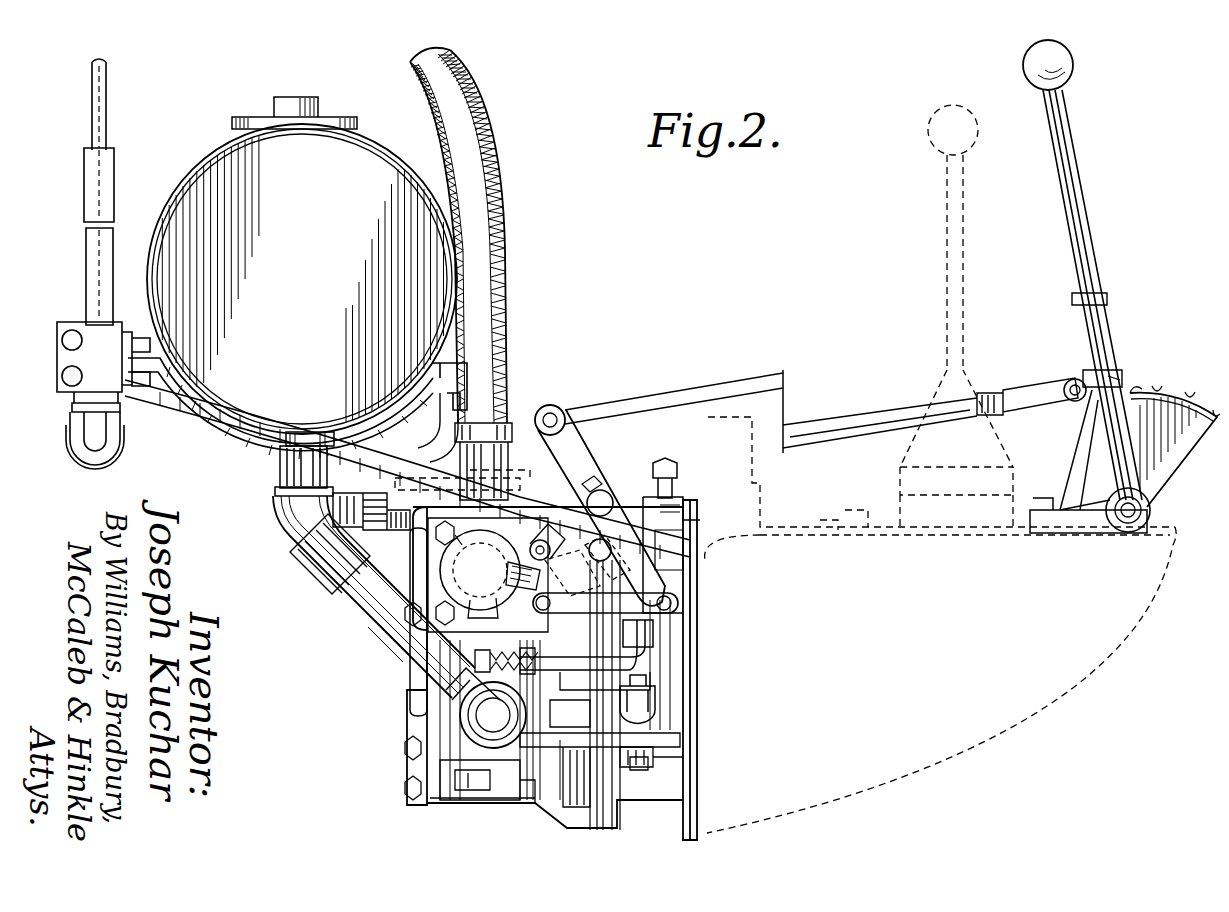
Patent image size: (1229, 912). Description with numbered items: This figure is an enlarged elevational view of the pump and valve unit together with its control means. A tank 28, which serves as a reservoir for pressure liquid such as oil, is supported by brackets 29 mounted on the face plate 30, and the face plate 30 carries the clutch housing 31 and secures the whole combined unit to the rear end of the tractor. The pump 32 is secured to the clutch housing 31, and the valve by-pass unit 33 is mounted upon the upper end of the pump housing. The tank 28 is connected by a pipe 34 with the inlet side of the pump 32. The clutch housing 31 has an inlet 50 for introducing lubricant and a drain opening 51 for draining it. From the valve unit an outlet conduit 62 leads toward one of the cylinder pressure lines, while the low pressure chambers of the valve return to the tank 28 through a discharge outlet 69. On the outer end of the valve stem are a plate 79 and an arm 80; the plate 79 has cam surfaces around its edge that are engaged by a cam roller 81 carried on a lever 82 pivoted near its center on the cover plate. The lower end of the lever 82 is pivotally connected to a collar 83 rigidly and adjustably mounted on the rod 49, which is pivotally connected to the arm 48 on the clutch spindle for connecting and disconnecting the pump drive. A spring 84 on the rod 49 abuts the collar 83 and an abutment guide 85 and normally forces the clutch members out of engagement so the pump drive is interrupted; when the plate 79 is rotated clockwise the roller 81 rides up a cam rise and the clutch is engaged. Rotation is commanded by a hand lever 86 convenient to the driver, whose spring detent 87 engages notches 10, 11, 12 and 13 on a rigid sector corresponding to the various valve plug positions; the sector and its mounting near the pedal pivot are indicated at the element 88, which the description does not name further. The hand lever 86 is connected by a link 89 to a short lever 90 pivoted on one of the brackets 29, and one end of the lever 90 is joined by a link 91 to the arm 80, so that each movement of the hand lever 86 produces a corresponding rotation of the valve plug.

The notch 10 is at (1135, 385).
The notch 11 is at (1158, 386).
The notch 12 is at (1190, 392).
The notch 13 is at (1216, 410).
The tank 28 is at (330, 265).
The brackets 29 is at (400, 455).
The face plate 30 is at (697, 598).
The clutch housing 31 is at (670, 708).
The pump 32 is at (485, 790).
The valve by-pass unit 33 is at (402, 591).
The pipe 34 is at (368, 614).
The arm 48 is at (680, 638).
The rod 49 is at (680, 662).
The inlet 50 is at (650, 718).
The drain opening 51 is at (650, 765).
The outlet conduit 62 is at (507, 292).
The discharge outlet 69 is at (408, 526).
The plate 79 is at (488, 575).
The arm 80 is at (503, 579).
The cam roller 81 is at (551, 542).
The lever 82 is at (572, 572).
The collar 83 is at (570, 713).
The spring 84 is at (486, 708).
The abutment guide 85 is at (480, 640).
The hand lever 86 is at (1078, 213).
The spring detent 87 is at (1113, 378).
The pedal pivot bracket 88 is at (1165, 475).
The link 89 is at (852, 425).
The short lever 90 is at (585, 470).
The link 91 is at (690, 622).